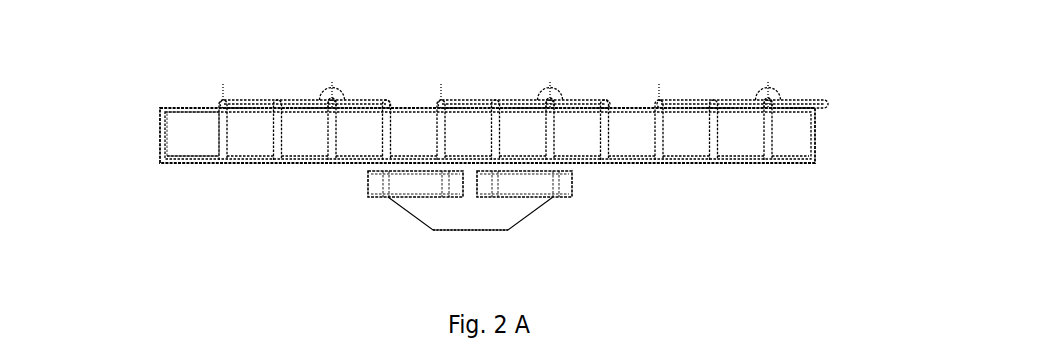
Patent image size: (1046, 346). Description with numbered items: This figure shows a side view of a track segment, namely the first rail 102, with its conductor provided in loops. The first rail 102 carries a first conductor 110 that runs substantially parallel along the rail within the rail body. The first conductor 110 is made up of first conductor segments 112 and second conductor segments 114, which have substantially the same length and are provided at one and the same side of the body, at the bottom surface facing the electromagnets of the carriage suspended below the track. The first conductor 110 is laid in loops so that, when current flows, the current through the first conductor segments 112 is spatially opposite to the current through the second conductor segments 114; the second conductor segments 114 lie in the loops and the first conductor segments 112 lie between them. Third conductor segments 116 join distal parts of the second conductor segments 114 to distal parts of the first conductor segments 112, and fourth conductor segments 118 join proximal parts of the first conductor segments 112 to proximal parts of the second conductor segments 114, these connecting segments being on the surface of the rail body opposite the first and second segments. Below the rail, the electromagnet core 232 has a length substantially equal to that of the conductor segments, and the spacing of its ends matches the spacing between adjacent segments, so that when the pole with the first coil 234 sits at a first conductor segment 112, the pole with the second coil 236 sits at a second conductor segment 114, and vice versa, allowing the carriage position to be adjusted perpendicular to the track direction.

The first rail 102 is at (433, 88).
The first conductor 110 is at (551, 61).
The first conductor segments 112 is at (193, 158).
The second conductor segments 114 is at (305, 157).
The third conductor segments 116 is at (365, 100).
The fourth conductor segments 118 is at (462, 100).
The core 232 is at (500, 213).
The first coil 234 is at (373, 183).
The second coil 236 is at (563, 184).